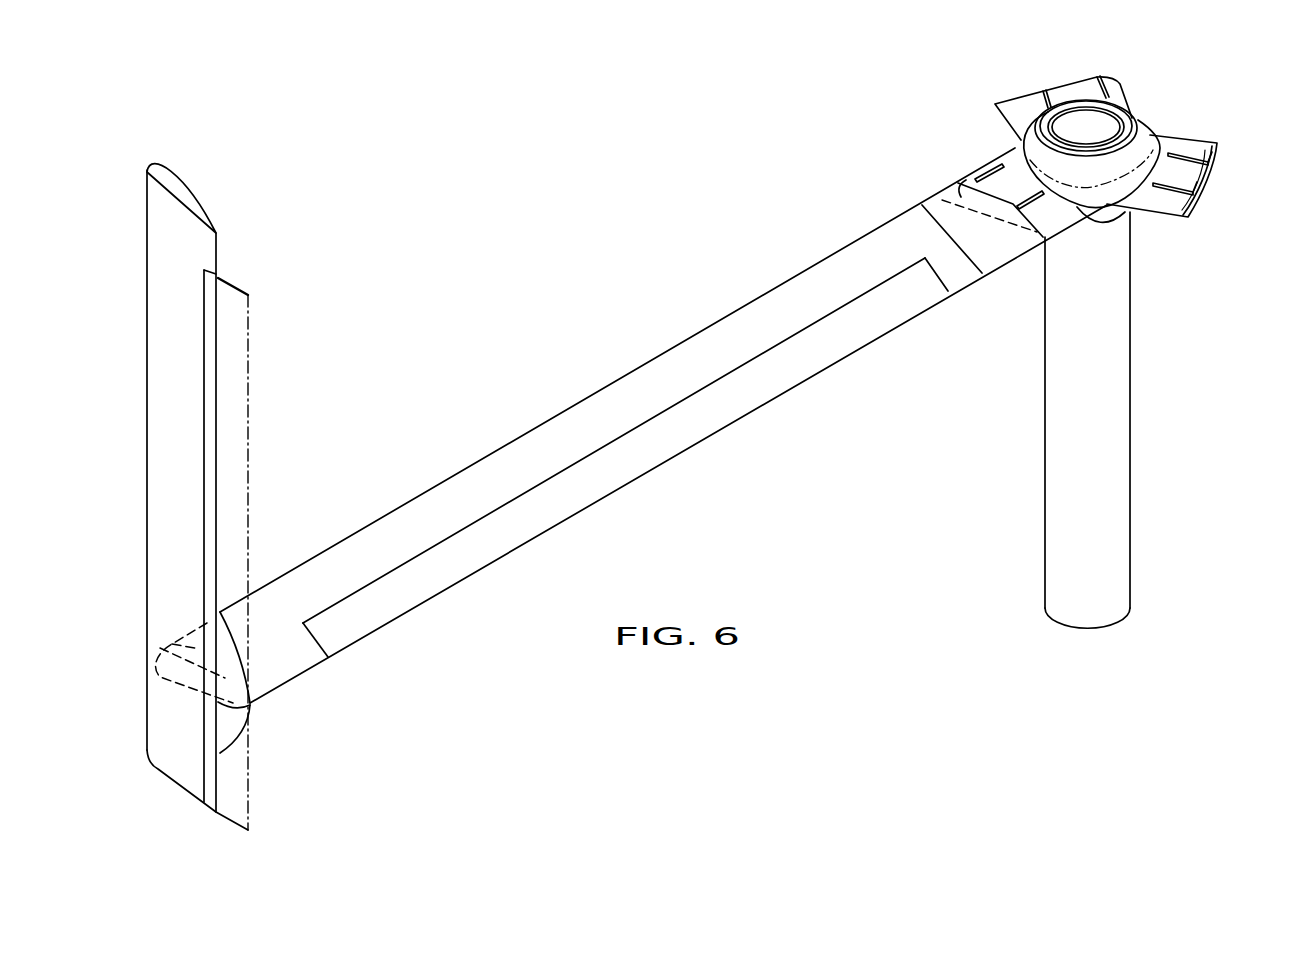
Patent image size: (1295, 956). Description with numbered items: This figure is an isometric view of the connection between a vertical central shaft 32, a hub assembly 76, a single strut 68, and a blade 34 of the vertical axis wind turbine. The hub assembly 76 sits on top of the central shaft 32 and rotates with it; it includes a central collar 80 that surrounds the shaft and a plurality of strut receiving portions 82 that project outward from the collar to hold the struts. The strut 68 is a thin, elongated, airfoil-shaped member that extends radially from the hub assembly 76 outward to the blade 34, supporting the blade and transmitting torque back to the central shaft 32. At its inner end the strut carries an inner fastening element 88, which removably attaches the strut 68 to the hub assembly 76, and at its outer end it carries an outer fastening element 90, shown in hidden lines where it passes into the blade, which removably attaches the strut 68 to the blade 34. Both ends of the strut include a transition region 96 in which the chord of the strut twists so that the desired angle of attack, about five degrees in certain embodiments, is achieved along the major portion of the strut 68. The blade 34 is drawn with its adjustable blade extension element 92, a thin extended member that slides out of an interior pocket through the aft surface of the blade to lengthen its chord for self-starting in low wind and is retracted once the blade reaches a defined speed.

The central shaft 32 is at (1110, 323).
The blade 34 is at (160, 293).
The strut 68 is at (568, 430).
The hub assembly 76 is at (1022, 133).
The central collar 80 is at (1133, 123).
The strut receiving portion 82 is at (1203, 190).
The inner fastening element 88 is at (940, 200).
The outer fastening element 90 is at (160, 680).
The blade extension element 92 is at (212, 350).
The transition region 96 is at (267, 675).